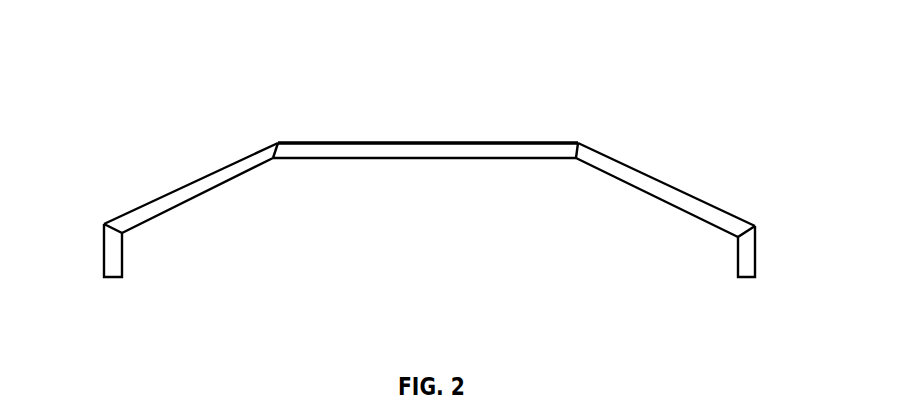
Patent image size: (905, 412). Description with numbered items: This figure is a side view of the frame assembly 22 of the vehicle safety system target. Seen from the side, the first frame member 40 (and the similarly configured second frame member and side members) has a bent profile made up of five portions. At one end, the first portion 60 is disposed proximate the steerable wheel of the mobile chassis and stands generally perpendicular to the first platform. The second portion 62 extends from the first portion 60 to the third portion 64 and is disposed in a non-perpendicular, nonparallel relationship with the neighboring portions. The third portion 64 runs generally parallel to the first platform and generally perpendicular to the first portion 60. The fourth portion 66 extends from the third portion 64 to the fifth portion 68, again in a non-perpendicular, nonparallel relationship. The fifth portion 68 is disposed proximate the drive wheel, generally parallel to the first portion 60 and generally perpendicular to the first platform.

The frame assembly 22 is at (625, 57).
The first frame member 40 is at (308, 130).
The first portion 60 is at (746, 258).
The second portion 62 is at (662, 190).
The third portion 64 is at (458, 150).
The fourth portion 66 is at (207, 182).
The fifth portion 68 is at (110, 258).